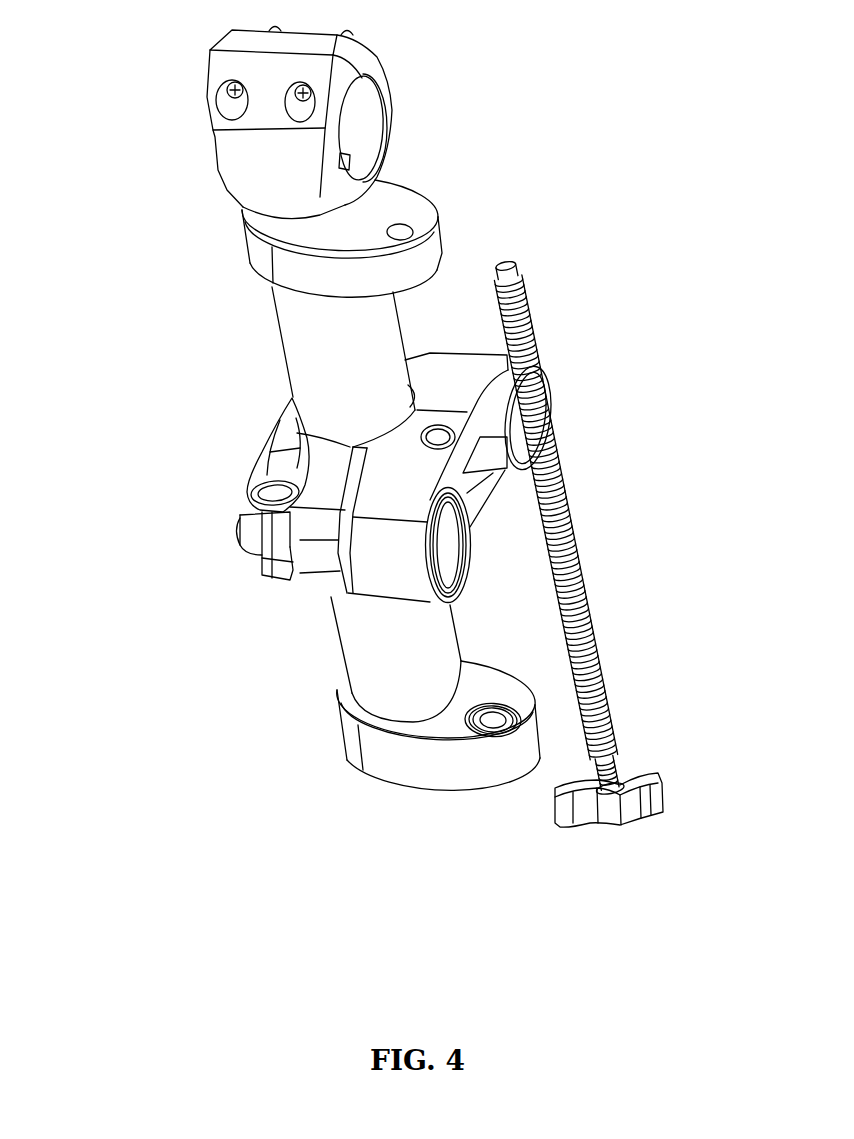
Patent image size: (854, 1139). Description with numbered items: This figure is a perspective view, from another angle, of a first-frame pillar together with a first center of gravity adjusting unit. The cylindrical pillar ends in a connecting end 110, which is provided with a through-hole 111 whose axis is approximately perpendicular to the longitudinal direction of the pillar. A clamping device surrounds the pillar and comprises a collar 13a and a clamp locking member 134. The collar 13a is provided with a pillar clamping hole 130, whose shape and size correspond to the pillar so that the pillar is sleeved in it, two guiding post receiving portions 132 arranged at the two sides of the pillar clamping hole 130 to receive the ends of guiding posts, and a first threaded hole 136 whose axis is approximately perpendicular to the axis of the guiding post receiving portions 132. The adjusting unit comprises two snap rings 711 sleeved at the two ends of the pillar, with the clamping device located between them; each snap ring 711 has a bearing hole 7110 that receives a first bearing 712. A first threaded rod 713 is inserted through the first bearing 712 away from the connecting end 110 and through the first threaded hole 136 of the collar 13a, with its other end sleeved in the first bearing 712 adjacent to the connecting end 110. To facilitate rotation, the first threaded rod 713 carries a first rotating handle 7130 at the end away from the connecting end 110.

The connecting end 110 is at (280, 148).
The through-hole 111 is at (390, 122).
The snap ring 711 is at (410, 209).
The first threaded hole 136 is at (440, 433).
The pillar clamping hole 130 is at (285, 433).
The clamp locking member 134 is at (258, 469).
The collar 13a is at (372, 550).
The guiding post receiving portion 132 is at (452, 553).
The first threaded rod 713 is at (573, 545).
The bearing hole 7110 is at (481, 737).
The first bearing 712 is at (516, 722).
The first rotating handle 7130 is at (647, 799).